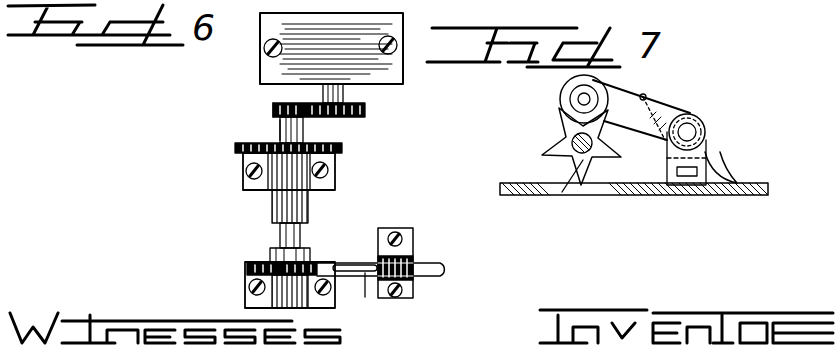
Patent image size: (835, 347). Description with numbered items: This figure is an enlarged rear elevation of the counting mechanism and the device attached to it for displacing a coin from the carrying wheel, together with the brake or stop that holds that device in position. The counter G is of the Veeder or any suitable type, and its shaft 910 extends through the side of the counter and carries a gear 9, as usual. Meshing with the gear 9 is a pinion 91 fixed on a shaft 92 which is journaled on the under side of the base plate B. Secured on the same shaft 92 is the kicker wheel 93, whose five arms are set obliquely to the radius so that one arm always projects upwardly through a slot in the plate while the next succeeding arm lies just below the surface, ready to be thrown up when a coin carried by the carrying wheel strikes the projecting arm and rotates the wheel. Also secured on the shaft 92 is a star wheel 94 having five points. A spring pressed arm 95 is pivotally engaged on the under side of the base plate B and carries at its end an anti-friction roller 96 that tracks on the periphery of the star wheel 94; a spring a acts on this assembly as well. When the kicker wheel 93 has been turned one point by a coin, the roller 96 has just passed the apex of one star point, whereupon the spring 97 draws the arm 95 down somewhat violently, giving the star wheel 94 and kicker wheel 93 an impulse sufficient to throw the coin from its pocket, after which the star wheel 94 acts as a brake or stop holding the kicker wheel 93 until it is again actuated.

In FIG. 6, the counter G is at (272, 63).
In FIG. 6, the gear 9 is at (365, 112).
In FIG. 6, the pinion 91 is at (273, 110).
In FIG. 6, the shaft 92 is at (303, 130).
In FIG. 7, the shaft 92 is at (570, 138).
In FIG. 6, the kicker wheel 93 is at (240, 153).
In FIG. 6, the star wheel 94 is at (247, 268).
In FIG. 7, the star wheel 94 is at (562, 192).
In FIG. 6, the spring pressed arm 95 is at (330, 268).
In FIG. 7, the spring pressed arm 95 is at (660, 115).
In FIG. 6, the anti-friction roller 96 is at (298, 262).
In FIG. 7, the anti-friction roller 96 is at (572, 80).
In FIG. 6, the spring 97 is at (437, 274).
In FIG. 7, the spring 97 is at (720, 175).
In FIG. 6, the shaft 910 is at (343, 91).
In FIG. 7, the spring a is at (705, 18).
In FIG. 7, the base plate B is at (638, 197).